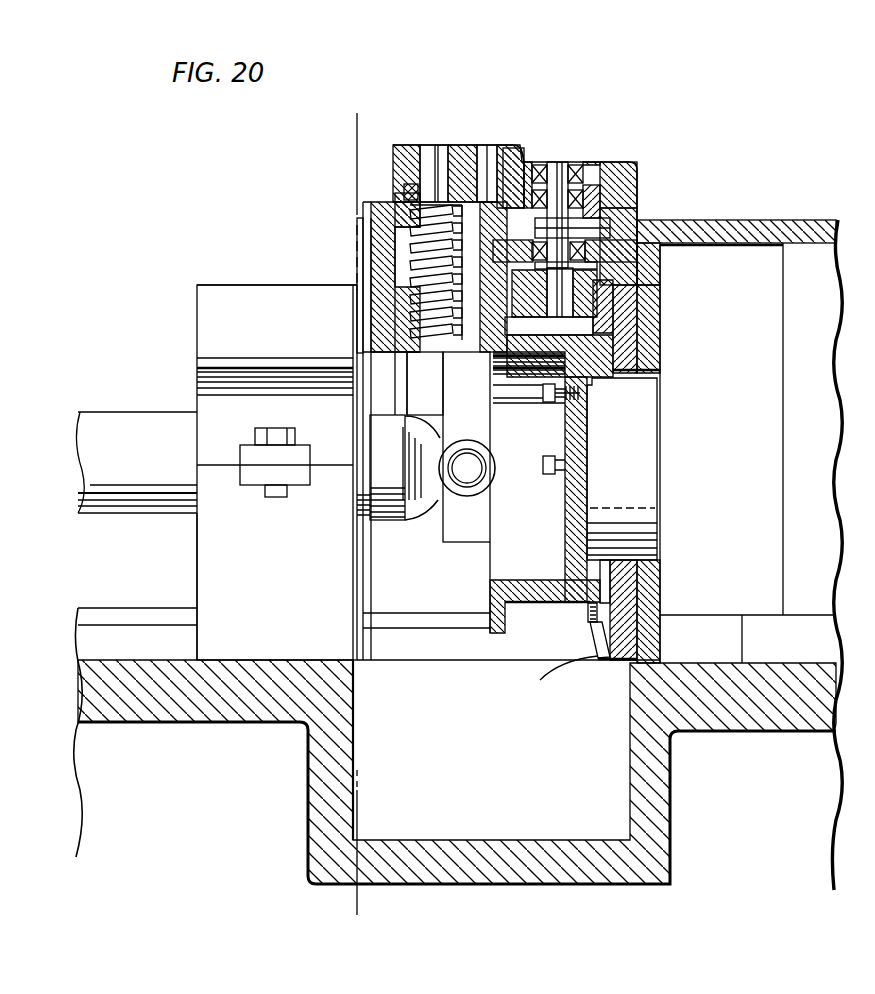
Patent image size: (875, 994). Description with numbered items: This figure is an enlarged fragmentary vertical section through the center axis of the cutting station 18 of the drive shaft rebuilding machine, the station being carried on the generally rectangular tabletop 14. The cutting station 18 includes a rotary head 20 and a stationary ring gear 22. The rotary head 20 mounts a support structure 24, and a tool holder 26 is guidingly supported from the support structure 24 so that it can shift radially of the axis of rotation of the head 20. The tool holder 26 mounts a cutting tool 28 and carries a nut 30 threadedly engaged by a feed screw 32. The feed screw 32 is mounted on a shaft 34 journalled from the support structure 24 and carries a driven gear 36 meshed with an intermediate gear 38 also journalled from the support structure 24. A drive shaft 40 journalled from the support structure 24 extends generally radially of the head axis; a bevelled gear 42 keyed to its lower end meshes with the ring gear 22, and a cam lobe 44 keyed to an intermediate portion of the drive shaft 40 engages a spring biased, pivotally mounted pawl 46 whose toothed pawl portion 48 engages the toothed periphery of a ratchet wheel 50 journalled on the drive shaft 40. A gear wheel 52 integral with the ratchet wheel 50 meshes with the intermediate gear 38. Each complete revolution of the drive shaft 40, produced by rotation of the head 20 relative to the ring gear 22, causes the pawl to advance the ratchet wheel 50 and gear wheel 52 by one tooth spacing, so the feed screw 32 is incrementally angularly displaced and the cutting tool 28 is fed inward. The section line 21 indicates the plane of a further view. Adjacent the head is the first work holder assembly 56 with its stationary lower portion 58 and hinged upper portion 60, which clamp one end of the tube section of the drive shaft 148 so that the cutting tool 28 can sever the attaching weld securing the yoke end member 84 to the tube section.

The tabletop 14 is at (222, 720).
The cutting station 18 is at (673, 219).
The rotary head 20 is at (640, 460).
The section line 21 is at (378, 128).
The stationary ring gear 22 is at (598, 650).
The support structure 24 is at (527, 158).
The tool holder 26 is at (388, 258).
The cutting tool 28 is at (366, 278).
The nut 30 is at (400, 215).
The feed screw 32 is at (433, 330).
The shaft 34 is at (437, 150).
The driven gear 36 is at (412, 188).
The intermediate gear 38 is at (476, 185).
The drive shaft 40 is at (558, 290).
The bevelled gear 42 is at (583, 305).
The cam lobe 44 is at (588, 262).
The pawl 46 is at (628, 253).
The toothed pawl portion 48 is at (630, 215).
The ratchet wheel 50 is at (598, 212).
The gear wheel 52 is at (578, 205).
The first work holder assembly 56 is at (192, 328).
The stationary lower portion 58 is at (196, 568).
The hinged upper portion 60 is at (235, 283).
The yoke end member 84 is at (415, 503).
The drive shaft 148 is at (150, 406).